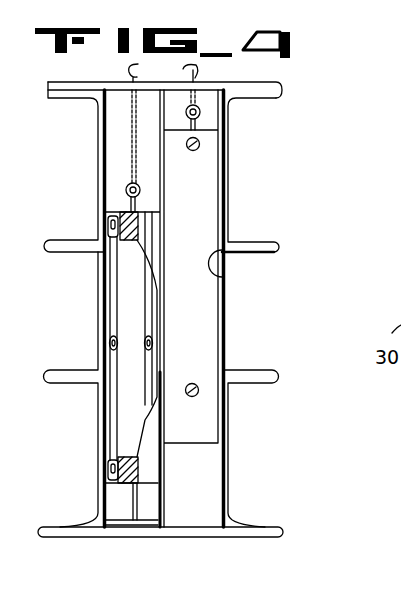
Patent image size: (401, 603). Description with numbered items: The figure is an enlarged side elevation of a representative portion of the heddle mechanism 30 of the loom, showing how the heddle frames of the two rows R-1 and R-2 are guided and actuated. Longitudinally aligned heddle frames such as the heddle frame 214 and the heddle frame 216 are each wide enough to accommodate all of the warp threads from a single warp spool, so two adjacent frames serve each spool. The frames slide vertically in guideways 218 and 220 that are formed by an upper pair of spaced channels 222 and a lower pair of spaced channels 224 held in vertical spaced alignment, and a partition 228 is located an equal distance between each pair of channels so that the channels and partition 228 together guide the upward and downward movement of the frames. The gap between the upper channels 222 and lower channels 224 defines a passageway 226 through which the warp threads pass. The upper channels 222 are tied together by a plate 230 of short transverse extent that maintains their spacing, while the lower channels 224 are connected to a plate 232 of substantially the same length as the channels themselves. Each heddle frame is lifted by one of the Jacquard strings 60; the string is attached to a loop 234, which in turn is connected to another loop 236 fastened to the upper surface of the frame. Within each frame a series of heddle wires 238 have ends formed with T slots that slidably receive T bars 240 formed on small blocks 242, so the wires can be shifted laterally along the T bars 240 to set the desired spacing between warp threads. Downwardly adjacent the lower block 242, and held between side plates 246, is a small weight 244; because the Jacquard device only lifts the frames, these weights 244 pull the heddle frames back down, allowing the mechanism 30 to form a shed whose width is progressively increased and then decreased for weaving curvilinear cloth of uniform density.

The window frame assembly 30 is at (297, 152).
The Jacquard string 60 is at (163, 122).
The heddle frame 214 is at (98, 290).
The heddle frame 216 is at (222, 327).
The guideway 218 is at (104, 119).
The guideway 220 is at (222, 278).
The upper channel 222 is at (97, 115).
The lower channel 224 is at (100, 385).
The passageway 226 is at (260, 256).
The partition 228 is at (168, 176).
The plate 230 is at (284, 86).
The plate 232 is at (100, 538).
The loop 234 is at (125, 190).
The loop 236 is at (131, 205).
The heddle wire 238 is at (112, 334).
The T bar 240 is at (108, 222).
The block 242 is at (130, 243).
The weight 244 is at (124, 506).
The side plate 246 is at (124, 432).
The row of heddle frames R-1 is at (116, 97).
The row of heddle frames R-2 is at (216, 96).